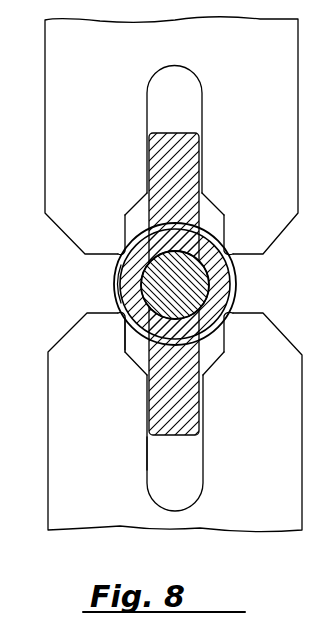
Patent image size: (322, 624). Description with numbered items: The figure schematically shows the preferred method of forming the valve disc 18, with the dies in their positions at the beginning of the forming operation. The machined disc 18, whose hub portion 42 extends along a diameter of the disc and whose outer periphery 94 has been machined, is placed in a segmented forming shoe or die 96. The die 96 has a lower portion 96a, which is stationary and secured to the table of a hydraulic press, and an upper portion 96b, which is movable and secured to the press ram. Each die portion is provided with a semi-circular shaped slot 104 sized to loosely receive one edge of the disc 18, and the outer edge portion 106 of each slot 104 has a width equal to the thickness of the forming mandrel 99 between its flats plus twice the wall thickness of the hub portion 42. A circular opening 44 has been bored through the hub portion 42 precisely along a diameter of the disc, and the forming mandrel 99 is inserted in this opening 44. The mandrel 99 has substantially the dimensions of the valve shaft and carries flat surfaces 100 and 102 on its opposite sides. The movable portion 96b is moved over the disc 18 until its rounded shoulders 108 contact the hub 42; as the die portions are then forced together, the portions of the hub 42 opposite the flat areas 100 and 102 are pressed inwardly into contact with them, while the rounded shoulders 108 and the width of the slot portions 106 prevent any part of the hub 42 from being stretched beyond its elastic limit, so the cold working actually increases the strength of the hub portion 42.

The segmented forming shoe or die 96 is at (155, 274).
The lower portion of the forming die 96a is at (30, 389).
The upper portion of the forming die 96b is at (171, 135).
The semi-circular shaped slot 104 is at (186, 106).
The outer edge portion of the slot 106 is at (137, 204).
The rounded shoulders 108 is at (121, 250).
The opening 44 is at (131, 335).
The valve disc 18 is at (193, 400).
The flat surface of the mandrel 100 is at (209, 283).
The hub portion 42 is at (226, 250).
The flat surface of the mandrel 102 is at (124, 271).
The forming mandrel 99 is at (167, 288).
The outer periphery of the disc 94 is at (150, 446).